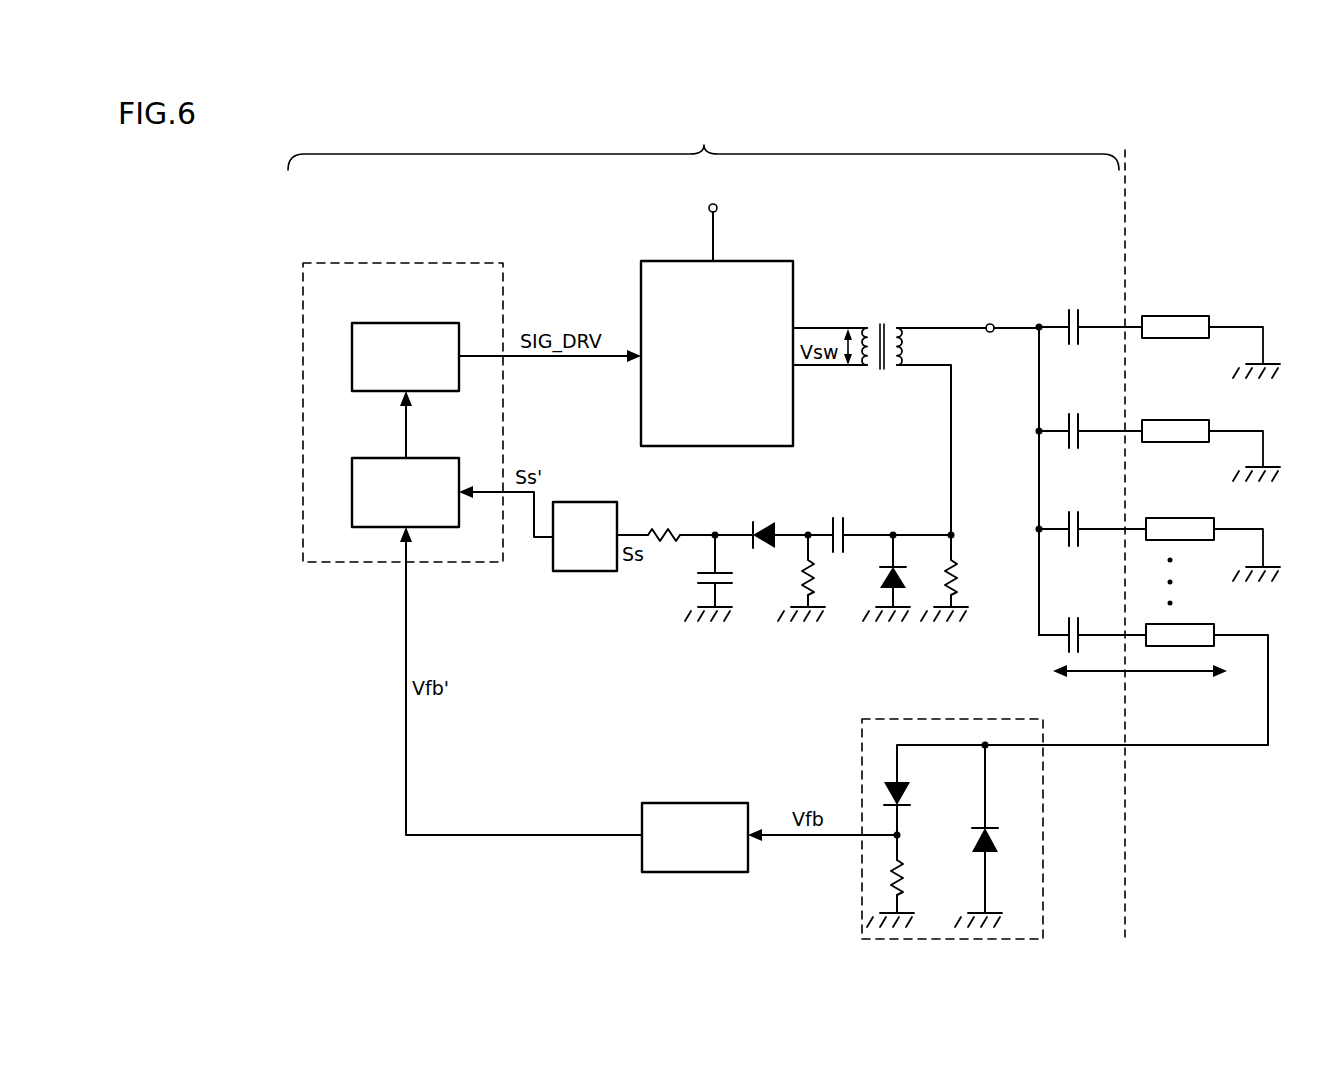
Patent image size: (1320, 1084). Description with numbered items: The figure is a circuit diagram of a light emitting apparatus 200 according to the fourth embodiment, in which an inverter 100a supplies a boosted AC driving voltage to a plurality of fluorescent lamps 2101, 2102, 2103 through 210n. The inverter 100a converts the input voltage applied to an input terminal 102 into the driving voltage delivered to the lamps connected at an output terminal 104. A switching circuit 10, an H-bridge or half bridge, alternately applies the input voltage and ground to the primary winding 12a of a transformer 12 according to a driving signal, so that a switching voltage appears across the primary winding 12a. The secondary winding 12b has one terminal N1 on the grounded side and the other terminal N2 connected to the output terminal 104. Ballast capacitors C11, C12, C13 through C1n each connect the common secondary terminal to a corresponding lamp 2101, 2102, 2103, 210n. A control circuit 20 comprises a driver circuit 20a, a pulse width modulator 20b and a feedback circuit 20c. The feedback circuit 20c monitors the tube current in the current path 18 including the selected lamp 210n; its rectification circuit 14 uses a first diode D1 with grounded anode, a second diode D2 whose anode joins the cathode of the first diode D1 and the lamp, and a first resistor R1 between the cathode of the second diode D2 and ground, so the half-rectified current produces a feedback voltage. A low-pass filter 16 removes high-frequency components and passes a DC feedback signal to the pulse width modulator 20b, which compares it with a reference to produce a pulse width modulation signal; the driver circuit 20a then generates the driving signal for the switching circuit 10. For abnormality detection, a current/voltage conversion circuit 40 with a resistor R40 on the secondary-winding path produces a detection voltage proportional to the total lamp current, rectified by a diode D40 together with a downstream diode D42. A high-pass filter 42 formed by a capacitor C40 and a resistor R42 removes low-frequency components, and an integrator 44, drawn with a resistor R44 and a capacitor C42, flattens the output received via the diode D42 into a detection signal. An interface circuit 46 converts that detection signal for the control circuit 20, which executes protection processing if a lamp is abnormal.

The inverter 100a is at (703, 144).
The light emitting apparatus 200 is at (1119, 123).
The control circuit 20 is at (461, 264).
The driver circuit 20a is at (372, 322).
The pulse width modulator 20b is at (374, 458).
The feedback circuit 20c is at (705, 746).
The switching circuit 10 is at (752, 261).
The input terminal 102 is at (717, 206).
The output terminal 104 is at (995, 334).
The transformer 12 is at (860, 394).
The primary winding 12a is at (868, 367).
The secondary winding 12b is at (897, 378).
The terminal N1 is at (951, 400).
The terminal N2 is at (940, 328).
The rectification circuit 14 is at (912, 829).
The low-pass filter 16 is at (698, 803).
The current path 18 is at (1104, 675).
The current/voltage conversion circuit 40 is at (934, 604).
The filter 42 is at (806, 577).
The integrator 44 is at (708, 595).
The interface circuit 46 is at (583, 572).
The ballast capacitor C11 is at (1073, 308).
The ballast capacitor C12 is at (1073, 412).
The ballast capacitor C13 is at (1073, 510).
The ballast capacitor C1n is at (1073, 616).
The fluorescent lamp 2101 is at (1175, 316).
The fluorescent lamp 2102 is at (1175, 420).
The fluorescent lamp 2103 is at (1179, 518).
The fluorescent lamp 210n is at (1179, 624).
The resistor R44 is at (664, 523).
The capacitor C42 is at (729, 577).
The diode D42 is at (759, 521).
The resistor R42 is at (819, 577).
The capacitor C40 is at (837, 521).
The diode D40 is at (904, 577).
The resistor R40 is at (963, 577).
The second diode D2 is at (906, 794).
The first diode D1 is at (996, 840).
The first resistor R1 is at (906, 878).